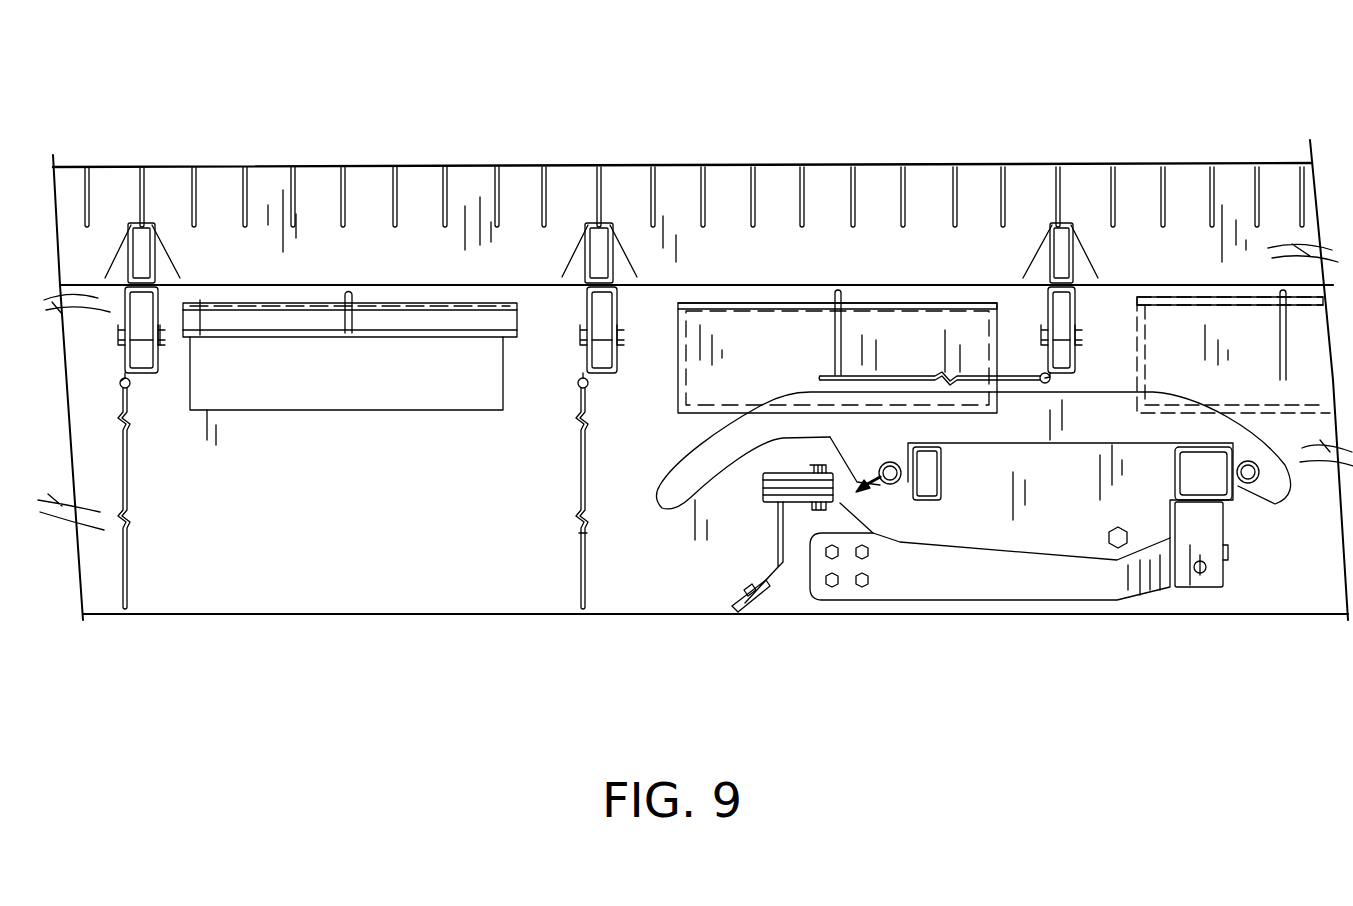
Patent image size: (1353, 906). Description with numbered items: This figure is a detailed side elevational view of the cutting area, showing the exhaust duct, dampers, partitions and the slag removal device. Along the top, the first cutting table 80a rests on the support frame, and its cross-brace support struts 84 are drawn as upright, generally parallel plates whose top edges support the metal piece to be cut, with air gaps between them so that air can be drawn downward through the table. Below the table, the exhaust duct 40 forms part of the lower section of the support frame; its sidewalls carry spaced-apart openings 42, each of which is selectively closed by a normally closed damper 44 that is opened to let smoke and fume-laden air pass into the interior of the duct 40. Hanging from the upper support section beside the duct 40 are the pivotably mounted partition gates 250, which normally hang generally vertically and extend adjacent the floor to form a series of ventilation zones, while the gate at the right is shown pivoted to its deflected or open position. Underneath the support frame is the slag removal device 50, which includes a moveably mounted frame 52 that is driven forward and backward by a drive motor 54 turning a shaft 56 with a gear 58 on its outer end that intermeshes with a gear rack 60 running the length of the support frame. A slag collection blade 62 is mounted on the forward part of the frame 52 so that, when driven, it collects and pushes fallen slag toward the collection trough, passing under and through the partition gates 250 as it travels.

The exhaust duct 40 is at (547, 360).
The first cutting table 80a is at (698, 166).
The cross-brace support struts 84 is at (600, 190).
The damper 44 is at (343, 390).
The spaced-apart openings 42 is at (270, 410).
The partition gates 250 is at (580, 467).
The gear 58 is at (893, 462).
The drive motor 54 is at (917, 513).
The slag removal device 50 is at (1045, 517).
The moveably mounted frame 52 is at (1092, 580).
The gear rack 60 is at (1165, 597).
The shaft 56 is at (840, 503).
The slag collection blade 62 is at (783, 533).